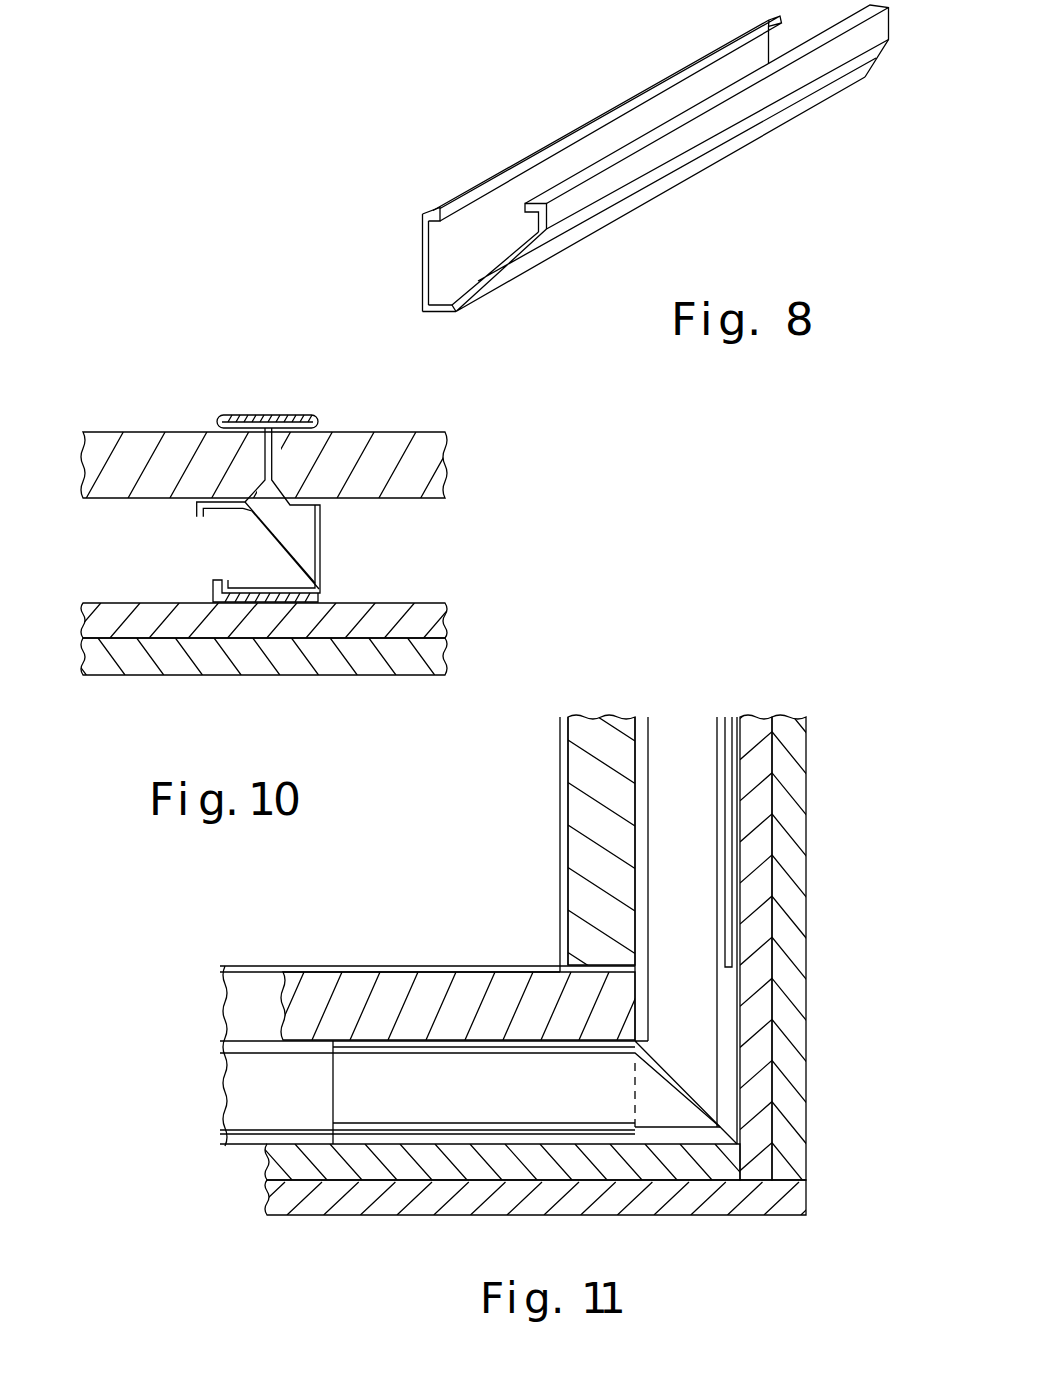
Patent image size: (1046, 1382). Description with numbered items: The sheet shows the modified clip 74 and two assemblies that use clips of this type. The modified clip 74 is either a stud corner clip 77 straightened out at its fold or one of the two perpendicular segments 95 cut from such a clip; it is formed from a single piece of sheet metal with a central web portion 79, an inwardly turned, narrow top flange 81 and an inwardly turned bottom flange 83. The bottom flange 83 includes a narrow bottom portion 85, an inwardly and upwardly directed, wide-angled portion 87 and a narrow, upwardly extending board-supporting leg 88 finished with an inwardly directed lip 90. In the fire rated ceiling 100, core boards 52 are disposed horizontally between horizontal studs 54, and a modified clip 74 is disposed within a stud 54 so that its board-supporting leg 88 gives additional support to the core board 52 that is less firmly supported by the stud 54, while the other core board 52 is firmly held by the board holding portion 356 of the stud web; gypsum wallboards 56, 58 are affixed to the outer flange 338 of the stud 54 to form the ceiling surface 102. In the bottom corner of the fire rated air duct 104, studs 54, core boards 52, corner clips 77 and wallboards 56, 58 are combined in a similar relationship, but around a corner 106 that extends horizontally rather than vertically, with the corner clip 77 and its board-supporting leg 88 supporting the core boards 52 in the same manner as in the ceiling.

In FIG. 8, the modified clip 74 is at (570, 130).
In FIG. 10, the modified clip 74 is at (197, 503).
In FIG. 8, the central web portion 79 is at (412, 233).
In FIG. 8, the top flange 81 is at (518, 165).
In FIG. 8, the bottom flange 83 is at (460, 312).
In FIG. 8, the bottom portion 85 is at (441, 313).
In FIG. 8, the wide-angled portion 87 is at (526, 245).
In FIG. 8, the board-supporting leg 88 is at (550, 220).
In FIG. 10, the board-supporting leg 88 is at (245, 500).
In FIG. 11, the board-supporting leg 88 is at (462, 1050).
In FIG. 8, the lip 90 is at (657, 132).
In FIG. 11, the lip 90 is at (430, 1045).
In FIG. 8, the segments 95 is at (466, 190).
In FIG. 11, the segments 95 is at (730, 992).
In FIG. 10, the fire rated ceiling 100 is at (130, 318).
In FIG. 10, the ceiling surface 102 is at (167, 675).
In FIG. 11, the fire rated air duct 104 is at (257, 903).
In FIG. 11, the corner 106 is at (808, 1218).
In FIG. 10, the core board 52 is at (447, 452).
In FIG. 11, the core board 52 is at (618, 717).
In FIG. 10, the horizontal stud 54 is at (292, 417).
In FIG. 11, the horizontal stud 54 is at (736, 902).
In FIG. 10, the gypsum wallboard 56 is at (445, 604).
In FIG. 11, the gypsum wallboard 56 is at (755, 717).
In FIG. 10, the gypsum wallboard 58 is at (445, 645).
In FIG. 11, the gypsum wallboard 58 is at (793, 717).
In FIG. 11, the stud corner clip 77 is at (333, 1098).
In FIG. 10, the outer flange 338 is at (300, 597).
In FIG. 10, the board holding portion 356 is at (303, 510).